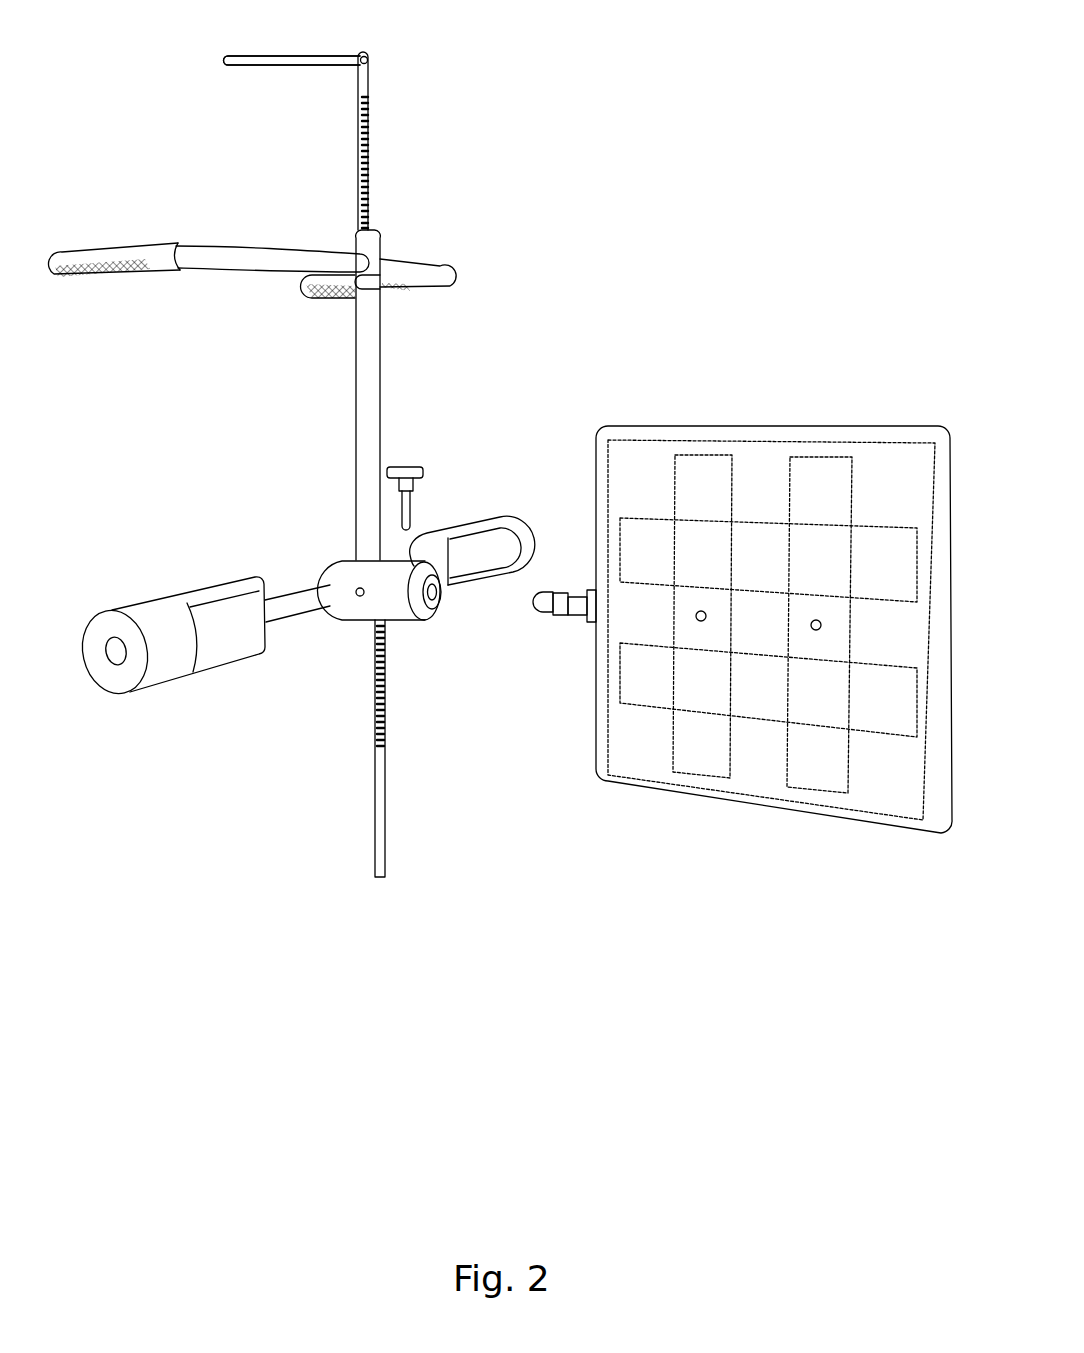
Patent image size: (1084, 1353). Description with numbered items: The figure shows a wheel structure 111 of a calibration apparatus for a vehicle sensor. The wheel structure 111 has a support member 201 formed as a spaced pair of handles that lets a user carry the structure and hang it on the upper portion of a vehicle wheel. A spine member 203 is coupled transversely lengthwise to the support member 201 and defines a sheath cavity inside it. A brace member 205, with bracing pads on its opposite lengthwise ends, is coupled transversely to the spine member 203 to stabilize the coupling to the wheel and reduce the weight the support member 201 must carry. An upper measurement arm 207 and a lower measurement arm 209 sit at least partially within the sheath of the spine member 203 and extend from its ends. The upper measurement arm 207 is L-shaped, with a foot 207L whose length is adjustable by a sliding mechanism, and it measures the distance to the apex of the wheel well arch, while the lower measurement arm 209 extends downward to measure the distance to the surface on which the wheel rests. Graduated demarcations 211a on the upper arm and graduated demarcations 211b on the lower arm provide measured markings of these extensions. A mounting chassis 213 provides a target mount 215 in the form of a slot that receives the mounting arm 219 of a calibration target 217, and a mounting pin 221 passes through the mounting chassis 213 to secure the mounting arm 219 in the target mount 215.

The wheel structure 111 is at (768, 95).
The support member 201 is at (216, 250).
The spine member 203 is at (358, 339).
The brace member 205 is at (278, 602).
The upper measurement arm 207 is at (370, 66).
The foot 207L is at (327, 62).
The lower measurement arm 209 is at (378, 871).
The graduated demarcations 211a is at (372, 165).
The graduated demarcations 211b is at (376, 745).
The mounting chassis 213 is at (355, 572).
The target mount 215 is at (440, 598).
The calibration target 217 is at (798, 437).
The mounting arm 219 is at (556, 590).
The mounting pin 221 is at (408, 463).